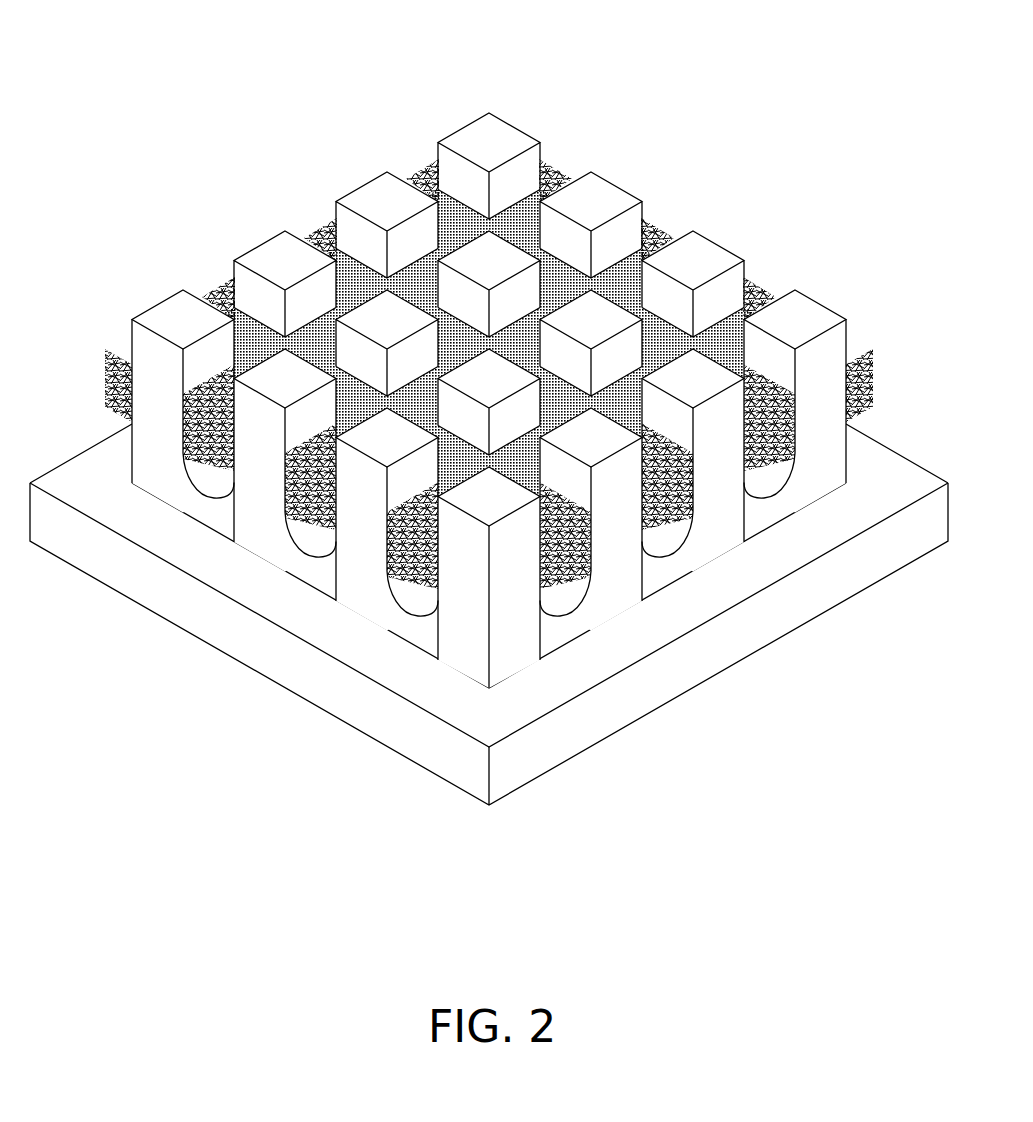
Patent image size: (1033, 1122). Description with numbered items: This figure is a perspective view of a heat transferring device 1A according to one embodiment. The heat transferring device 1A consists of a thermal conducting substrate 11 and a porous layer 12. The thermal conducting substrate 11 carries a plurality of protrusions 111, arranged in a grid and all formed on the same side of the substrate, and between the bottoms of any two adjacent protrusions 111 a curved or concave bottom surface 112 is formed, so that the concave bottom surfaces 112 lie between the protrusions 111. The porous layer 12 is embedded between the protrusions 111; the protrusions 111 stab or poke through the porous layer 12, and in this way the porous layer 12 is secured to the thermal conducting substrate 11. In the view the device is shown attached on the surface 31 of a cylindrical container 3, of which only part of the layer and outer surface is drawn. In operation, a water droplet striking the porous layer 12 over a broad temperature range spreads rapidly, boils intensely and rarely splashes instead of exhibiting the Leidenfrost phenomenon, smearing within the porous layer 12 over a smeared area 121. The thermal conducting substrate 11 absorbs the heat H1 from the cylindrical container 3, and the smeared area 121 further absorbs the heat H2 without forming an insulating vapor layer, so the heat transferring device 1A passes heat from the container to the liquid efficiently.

The heat transferring device 1A is at (298, 146).
The cylindrical container 3 is at (489, 651).
The surface of cylindrical container 31 is at (200, 547).
The thermal conducting substrate 11 is at (455, 654).
The protrusions 111 is at (526, 161).
The concave bottom surface 112 is at (556, 600).
The porous layer 12 is at (661, 238).
The smeared area 121 is at (354, 268).
The heat absorbed from cylindrical container H1 is at (260, 502).
The heat absorbed by smeared area H2 is at (414, 388).